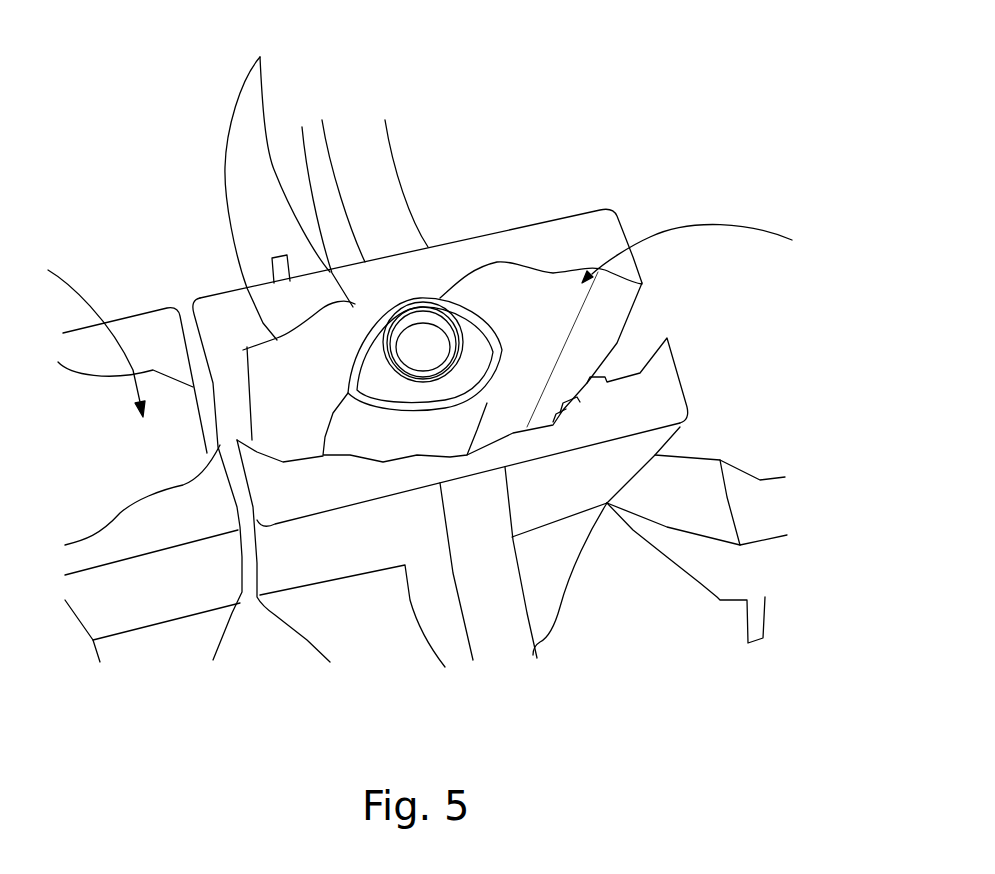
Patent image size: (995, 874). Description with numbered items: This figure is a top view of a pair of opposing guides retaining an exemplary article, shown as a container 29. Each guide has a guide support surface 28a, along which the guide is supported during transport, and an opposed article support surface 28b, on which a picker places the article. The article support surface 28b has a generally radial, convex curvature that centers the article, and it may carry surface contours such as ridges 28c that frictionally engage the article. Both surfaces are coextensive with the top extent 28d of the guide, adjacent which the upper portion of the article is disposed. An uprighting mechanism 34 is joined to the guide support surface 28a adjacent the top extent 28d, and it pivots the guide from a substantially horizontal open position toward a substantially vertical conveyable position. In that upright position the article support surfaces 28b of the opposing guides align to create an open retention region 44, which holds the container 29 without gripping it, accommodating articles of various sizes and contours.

The guide support surface 28a is at (453, 245).
The article support surface 28b is at (548, 270).
The ridges 28c is at (277, 187).
The top extent 28d is at (523, 247).
The container 29 is at (480, 352).
The uprighting mechanism 34 is at (377, 200).
The retention region 44 is at (420, 321).